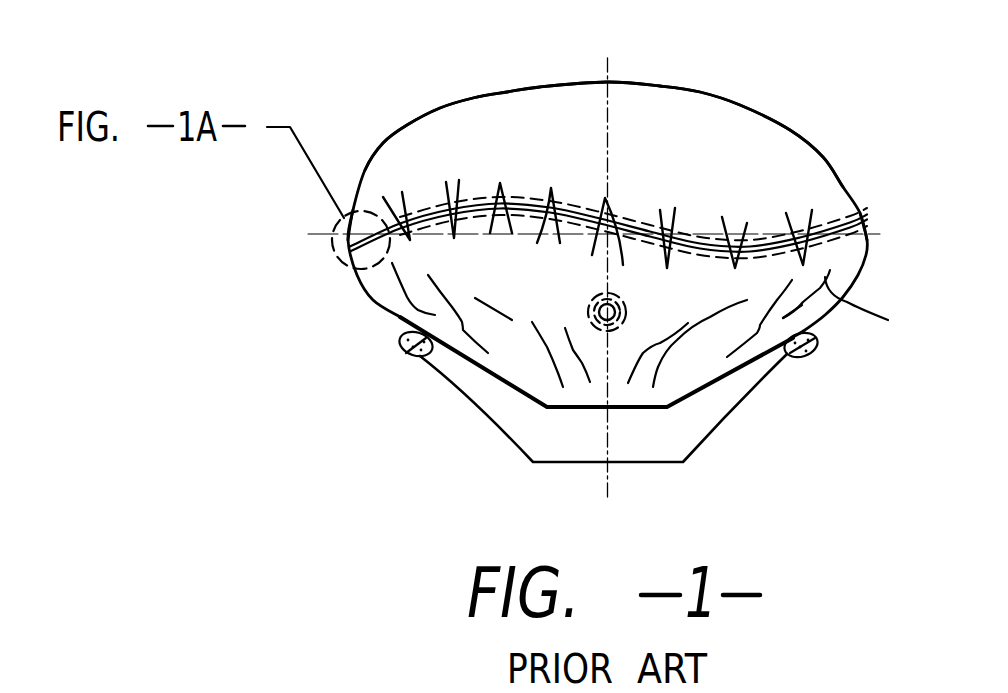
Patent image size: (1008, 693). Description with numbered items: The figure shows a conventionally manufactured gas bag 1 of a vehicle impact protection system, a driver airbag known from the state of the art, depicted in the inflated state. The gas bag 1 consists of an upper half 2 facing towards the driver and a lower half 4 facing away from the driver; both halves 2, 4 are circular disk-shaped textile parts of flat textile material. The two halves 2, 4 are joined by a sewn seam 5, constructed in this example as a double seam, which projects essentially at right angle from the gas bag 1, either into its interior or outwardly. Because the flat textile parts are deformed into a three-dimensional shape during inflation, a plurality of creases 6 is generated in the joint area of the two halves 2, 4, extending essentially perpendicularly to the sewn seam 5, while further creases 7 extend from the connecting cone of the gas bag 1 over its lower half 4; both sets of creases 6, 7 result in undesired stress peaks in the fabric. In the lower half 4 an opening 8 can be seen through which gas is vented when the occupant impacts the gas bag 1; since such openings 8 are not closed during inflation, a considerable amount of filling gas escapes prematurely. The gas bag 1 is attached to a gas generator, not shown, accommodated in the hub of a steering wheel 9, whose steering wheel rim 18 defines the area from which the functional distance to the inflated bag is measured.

The gas bag 1 is at (434, 92).
The upper half 2 is at (843, 190).
The lower half 4 is at (856, 252).
The sewn seam 5 is at (527, 207).
The creases 6 is at (675, 208).
The creases 7 is at (792, 280).
The opening 8 is at (594, 310).
The steering wheel 9 is at (513, 432).
The steering wheel rim 18 is at (813, 355).